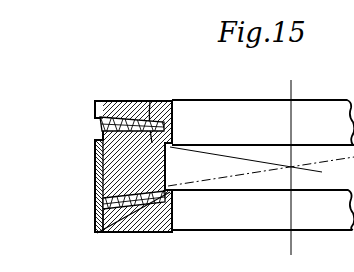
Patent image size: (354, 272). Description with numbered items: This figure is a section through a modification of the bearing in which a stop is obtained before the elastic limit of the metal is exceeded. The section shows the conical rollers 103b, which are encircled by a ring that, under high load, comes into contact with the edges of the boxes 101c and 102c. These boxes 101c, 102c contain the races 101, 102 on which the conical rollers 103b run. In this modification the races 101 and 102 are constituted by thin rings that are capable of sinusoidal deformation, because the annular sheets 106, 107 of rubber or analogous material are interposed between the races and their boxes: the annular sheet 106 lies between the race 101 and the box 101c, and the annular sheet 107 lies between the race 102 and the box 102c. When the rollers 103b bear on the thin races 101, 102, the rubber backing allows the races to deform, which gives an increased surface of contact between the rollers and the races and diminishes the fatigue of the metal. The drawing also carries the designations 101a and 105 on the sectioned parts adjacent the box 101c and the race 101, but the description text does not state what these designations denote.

The race 101 is at (98, 135).
The packing ring 101a is at (100, 122).
The box 101c is at (113, 110).
The race 102 is at (165, 176).
The box 102c is at (97, 233).
The conical rollers 103b is at (104, 200).
The sleeve 105 is at (97, 163).
The annular sheet 106 is at (148, 117).
The annular sheet 107 is at (103, 232).